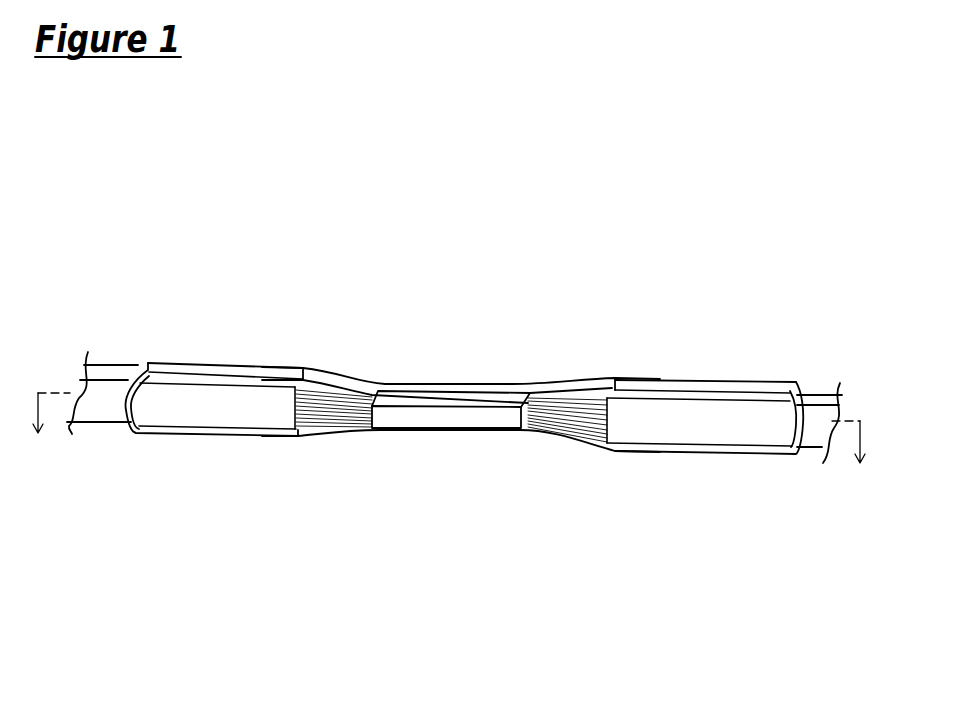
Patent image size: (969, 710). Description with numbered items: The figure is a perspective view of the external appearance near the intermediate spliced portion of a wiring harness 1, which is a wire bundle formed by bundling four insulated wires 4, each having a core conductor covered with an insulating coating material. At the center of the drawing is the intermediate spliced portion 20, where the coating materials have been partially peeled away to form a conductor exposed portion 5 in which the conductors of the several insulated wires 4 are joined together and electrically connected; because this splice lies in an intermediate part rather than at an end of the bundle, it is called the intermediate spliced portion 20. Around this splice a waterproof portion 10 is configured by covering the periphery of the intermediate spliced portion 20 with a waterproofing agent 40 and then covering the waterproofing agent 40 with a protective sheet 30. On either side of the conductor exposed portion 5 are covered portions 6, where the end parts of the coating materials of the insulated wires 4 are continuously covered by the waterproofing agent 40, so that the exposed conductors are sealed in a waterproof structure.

The wiring harness 1 is at (143, 304).
The insulated wire 4 is at (116, 372).
The conductor exposed portion 5 is at (335, 400).
The covered portion 6 is at (216, 363).
The waterproof portion 10 is at (446, 370).
The intermediate spliced portion 20 is at (440, 430).
The protective sheet 30 is at (200, 436).
The waterproofing agent 40 is at (340, 431).